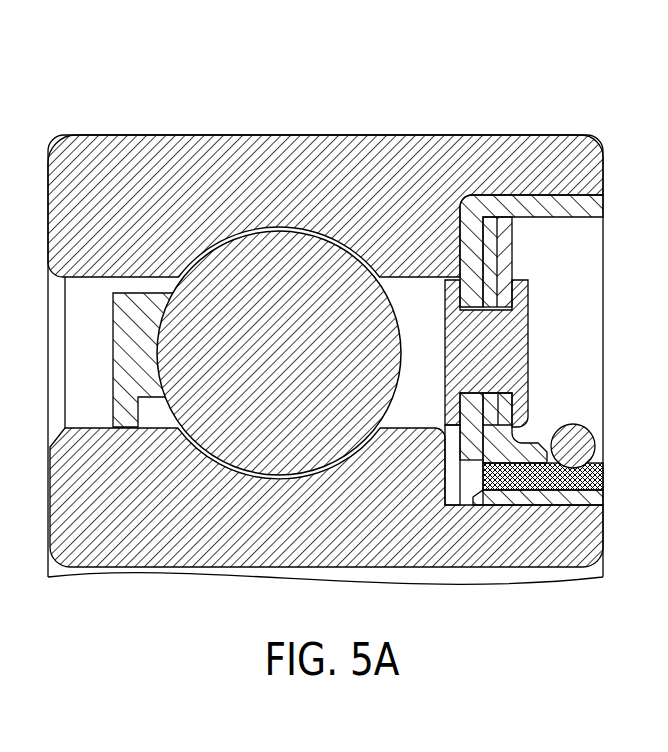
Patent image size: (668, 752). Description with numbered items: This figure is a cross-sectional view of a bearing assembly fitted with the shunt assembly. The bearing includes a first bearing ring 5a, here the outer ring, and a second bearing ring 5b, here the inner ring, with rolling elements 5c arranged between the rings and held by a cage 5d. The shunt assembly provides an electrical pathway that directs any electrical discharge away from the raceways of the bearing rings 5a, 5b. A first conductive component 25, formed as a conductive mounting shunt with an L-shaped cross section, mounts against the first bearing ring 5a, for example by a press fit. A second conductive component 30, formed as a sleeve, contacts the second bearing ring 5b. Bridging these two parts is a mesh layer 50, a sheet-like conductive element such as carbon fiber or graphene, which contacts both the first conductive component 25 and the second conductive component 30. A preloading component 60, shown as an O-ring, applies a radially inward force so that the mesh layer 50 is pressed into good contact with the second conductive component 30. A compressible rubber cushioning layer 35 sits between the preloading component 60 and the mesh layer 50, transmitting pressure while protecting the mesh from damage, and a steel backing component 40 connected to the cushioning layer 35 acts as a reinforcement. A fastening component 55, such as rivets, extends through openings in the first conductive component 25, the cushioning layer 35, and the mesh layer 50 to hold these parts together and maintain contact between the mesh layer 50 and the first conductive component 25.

The first bearing ring 5a is at (318, 172).
The second bearing ring 5b is at (107, 552).
The rolling elements 5c is at (235, 238).
The cage 5d is at (123, 367).
The first conductive component 25 is at (543, 203).
The backing component 40 is at (507, 262).
The fastening component 55 is at (498, 363).
The cushioning layer 35 is at (518, 427).
The mesh layer 50 is at (498, 488).
The second conductive component 30 is at (513, 495).
The preloading component 60 is at (586, 448).